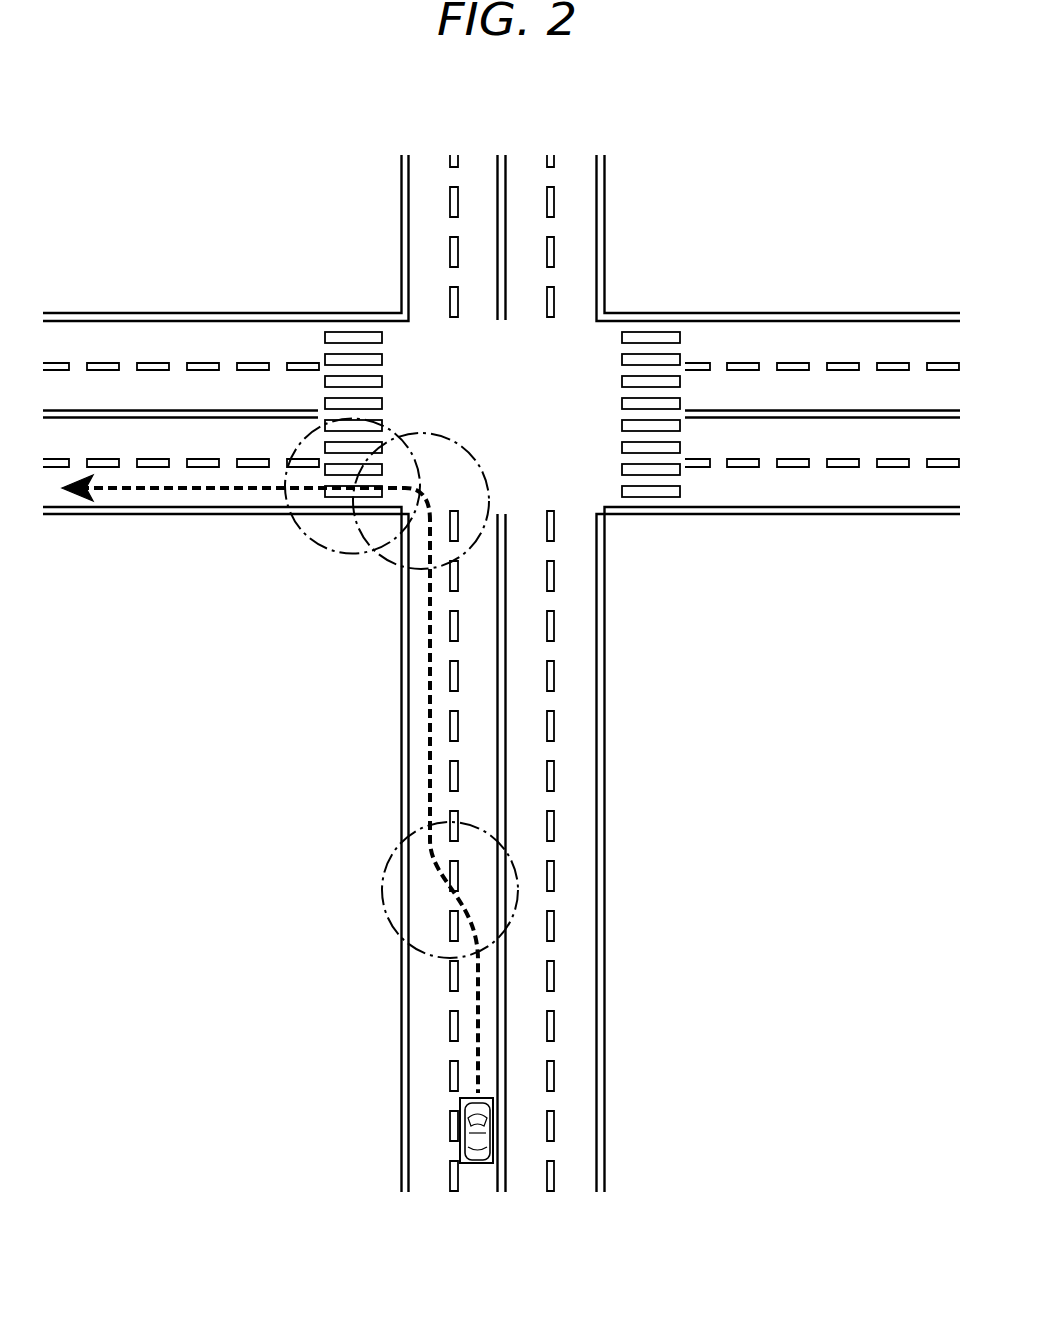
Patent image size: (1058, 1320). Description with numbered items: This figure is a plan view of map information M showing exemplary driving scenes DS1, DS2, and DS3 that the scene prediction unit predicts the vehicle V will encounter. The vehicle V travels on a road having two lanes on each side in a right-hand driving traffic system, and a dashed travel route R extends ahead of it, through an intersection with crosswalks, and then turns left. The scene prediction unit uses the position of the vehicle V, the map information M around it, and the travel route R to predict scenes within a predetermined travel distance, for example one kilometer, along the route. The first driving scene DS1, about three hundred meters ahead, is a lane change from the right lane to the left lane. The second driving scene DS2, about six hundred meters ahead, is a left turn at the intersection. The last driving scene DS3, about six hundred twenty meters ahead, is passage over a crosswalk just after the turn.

The map information M is at (214, 155).
The travel route R is at (428, 738).
The driving scene DS1 is at (383, 912).
The driving scene DS2 is at (457, 440).
The driving scene DS3 is at (308, 535).
The vehicle V is at (478, 1165).